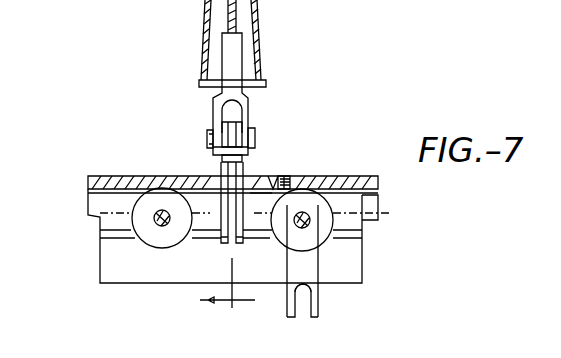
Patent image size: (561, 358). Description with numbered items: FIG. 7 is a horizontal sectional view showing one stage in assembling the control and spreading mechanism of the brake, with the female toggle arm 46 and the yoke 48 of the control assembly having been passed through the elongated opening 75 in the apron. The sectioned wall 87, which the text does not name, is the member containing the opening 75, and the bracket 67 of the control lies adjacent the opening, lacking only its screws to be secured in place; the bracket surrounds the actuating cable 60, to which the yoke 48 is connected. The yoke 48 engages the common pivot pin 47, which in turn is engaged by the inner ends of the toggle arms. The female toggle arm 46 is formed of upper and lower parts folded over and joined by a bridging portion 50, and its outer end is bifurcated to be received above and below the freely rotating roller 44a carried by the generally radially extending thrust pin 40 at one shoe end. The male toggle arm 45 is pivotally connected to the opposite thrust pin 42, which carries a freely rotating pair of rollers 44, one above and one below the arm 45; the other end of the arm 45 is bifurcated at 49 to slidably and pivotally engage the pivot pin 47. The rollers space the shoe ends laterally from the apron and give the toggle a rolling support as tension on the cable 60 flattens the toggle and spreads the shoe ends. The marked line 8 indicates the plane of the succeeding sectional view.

The actuating cable 60 is at (236, 18).
The bracket 67 is at (248, 50).
The yoke 48 is at (250, 108).
The pivot pin 47 is at (206, 140).
The connecting portion 50 is at (244, 160).
The female toggle arm 46 is at (244, 178).
The plate 87 is at (112, 176).
The pin 40 is at (157, 212).
The pin 42 is at (306, 212).
The rollers 44 is at (257, 215).
The roller 44a is at (142, 215).
The aperture 75 is at (273, 189).
The male toggle arm 45 is at (302, 261).
The bifurcated end 49 is at (306, 298).
The section line 8 is at (220, 284).